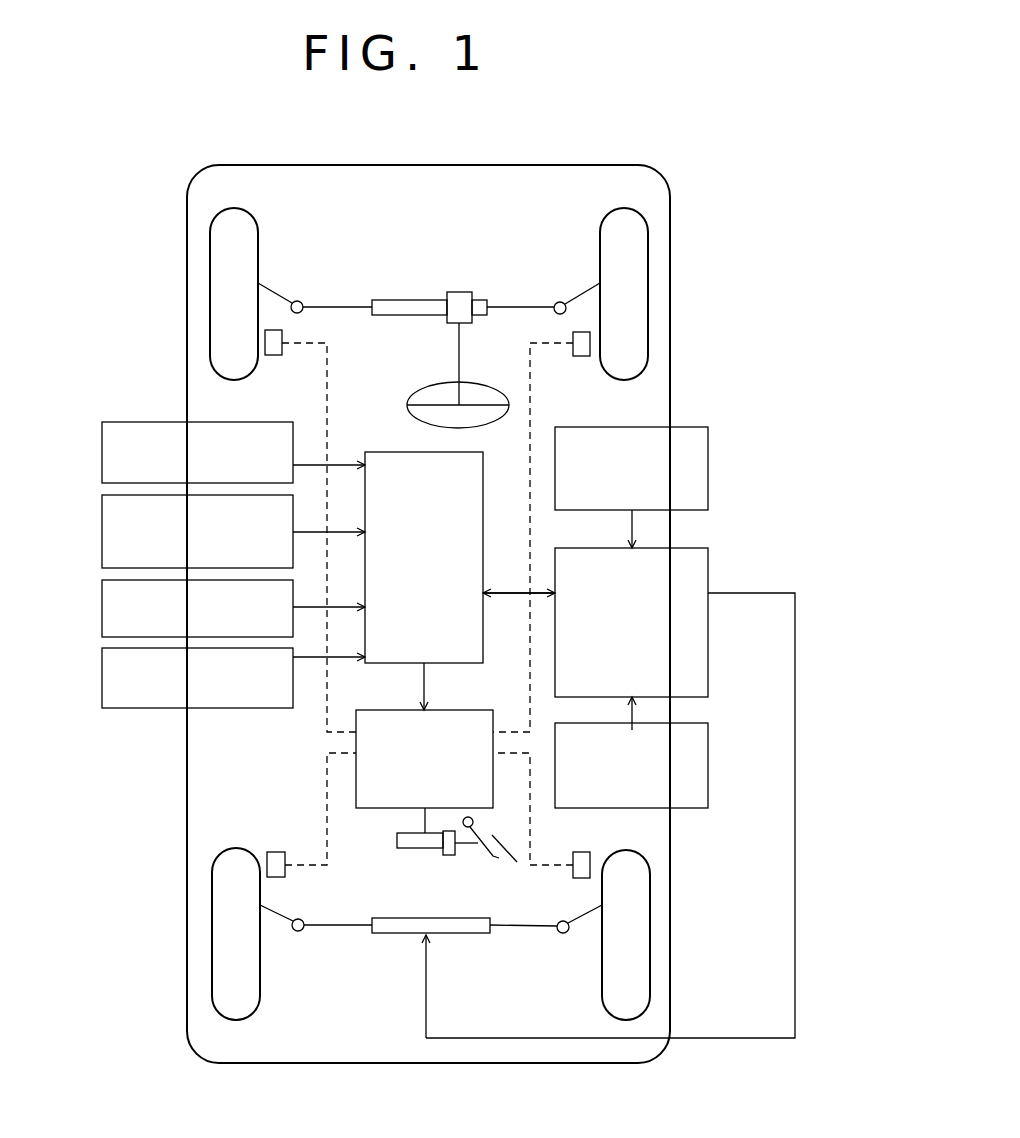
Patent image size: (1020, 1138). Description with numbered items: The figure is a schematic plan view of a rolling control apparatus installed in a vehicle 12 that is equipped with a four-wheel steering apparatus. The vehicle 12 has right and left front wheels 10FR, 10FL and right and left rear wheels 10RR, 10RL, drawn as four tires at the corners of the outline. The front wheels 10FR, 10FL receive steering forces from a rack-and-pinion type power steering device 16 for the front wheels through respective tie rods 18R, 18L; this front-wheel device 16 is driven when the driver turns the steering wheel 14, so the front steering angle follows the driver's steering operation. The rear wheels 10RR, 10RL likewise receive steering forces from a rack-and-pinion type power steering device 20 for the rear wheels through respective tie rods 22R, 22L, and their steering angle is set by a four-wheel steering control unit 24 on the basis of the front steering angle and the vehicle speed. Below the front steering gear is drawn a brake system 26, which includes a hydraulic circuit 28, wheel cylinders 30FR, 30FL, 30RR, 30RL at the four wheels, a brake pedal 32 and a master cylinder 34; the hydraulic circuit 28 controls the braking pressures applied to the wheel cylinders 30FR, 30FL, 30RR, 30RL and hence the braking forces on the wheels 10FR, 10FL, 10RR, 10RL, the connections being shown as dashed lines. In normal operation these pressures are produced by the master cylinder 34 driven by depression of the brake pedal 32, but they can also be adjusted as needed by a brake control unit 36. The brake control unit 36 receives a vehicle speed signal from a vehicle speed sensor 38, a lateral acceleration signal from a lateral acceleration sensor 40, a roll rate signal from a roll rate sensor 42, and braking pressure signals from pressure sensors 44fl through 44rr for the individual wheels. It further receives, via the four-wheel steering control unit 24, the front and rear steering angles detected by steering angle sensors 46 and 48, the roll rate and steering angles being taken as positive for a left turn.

The left front wheel 10FL is at (210, 270).
The right front wheel 10FR is at (648, 268).
The left rear wheel 10RL is at (212, 888).
The right rear wheel 10RR is at (650, 888).
The vehicle 12 is at (670, 345).
The steering wheel 14 is at (437, 382).
The rack-and-pinion type power steering device for front wheels 16 is at (459, 288).
The tie rod 18L is at (280, 297).
The tie rod 18R is at (577, 288).
The rack-and-pinion type power steering device for rear wheels 20 is at (409, 968).
The tie rod 22L is at (275, 912).
The tie rod 22R is at (588, 912).
The four-wheel steering control unit 24 is at (613, 694).
The brake system 26 is at (440, 868).
The hydraulic circuit 28 is at (405, 804).
The wheel cylinder 30FL is at (272, 355).
The wheel cylinder 30FR is at (583, 355).
The wheel cylinder 30RL is at (277, 852).
The wheel cylinder 30RR is at (583, 852).
The brake pedal 32 is at (517, 862).
The master cylinder 34 is at (398, 838).
The brake control unit 36 is at (405, 624).
The vehicle speed sensor 38 is at (137, 422).
The lateral acceleration sensor 40 is at (102, 528).
The roll rate sensor 42 is at (102, 603).
The pressure sensor 44fl is at (198, 704).
The pressure sensor 44rr is at (135, 708).
The steering angle sensor 46 is at (708, 460).
The steering angle sensor 48 is at (708, 765).